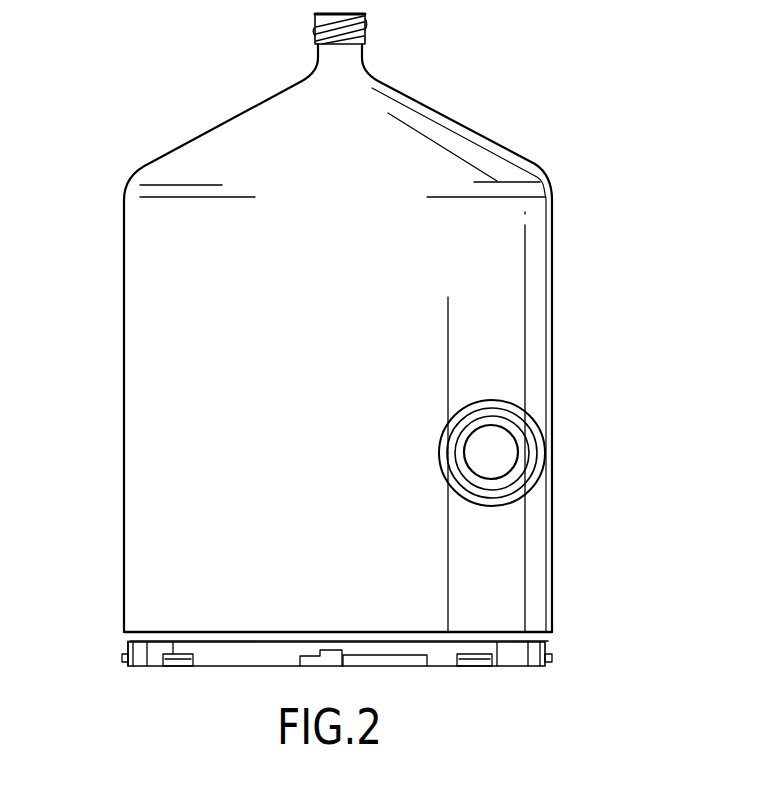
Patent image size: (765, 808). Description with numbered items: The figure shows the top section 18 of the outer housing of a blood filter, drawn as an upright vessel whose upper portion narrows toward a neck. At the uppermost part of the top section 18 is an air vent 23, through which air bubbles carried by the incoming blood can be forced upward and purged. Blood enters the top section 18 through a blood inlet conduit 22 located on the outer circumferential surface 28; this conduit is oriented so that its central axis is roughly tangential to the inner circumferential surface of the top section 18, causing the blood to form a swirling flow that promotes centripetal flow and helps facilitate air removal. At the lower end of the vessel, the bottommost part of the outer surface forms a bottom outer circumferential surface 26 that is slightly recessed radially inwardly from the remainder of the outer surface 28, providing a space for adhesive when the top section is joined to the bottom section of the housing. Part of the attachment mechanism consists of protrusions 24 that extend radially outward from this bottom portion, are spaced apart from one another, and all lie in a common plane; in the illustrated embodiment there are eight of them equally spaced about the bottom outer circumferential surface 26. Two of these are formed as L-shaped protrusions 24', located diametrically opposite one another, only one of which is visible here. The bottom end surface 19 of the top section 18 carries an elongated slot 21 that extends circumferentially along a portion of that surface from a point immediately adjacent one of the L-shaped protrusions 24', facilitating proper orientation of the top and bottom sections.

The top section 18 is at (553, 357).
The bottom end surface 19 is at (527, 668).
The elongated slot 21 is at (406, 655).
The blood inlet conduit 22 is at (530, 450).
The air vent 23 is at (367, 25).
The protrusions 24 is at (339, 692).
The L-shaped protrusions 24' is at (307, 623).
The bottom outer circumferential surface 26 is at (125, 652).
The outer circumferential surface 28 is at (123, 602).